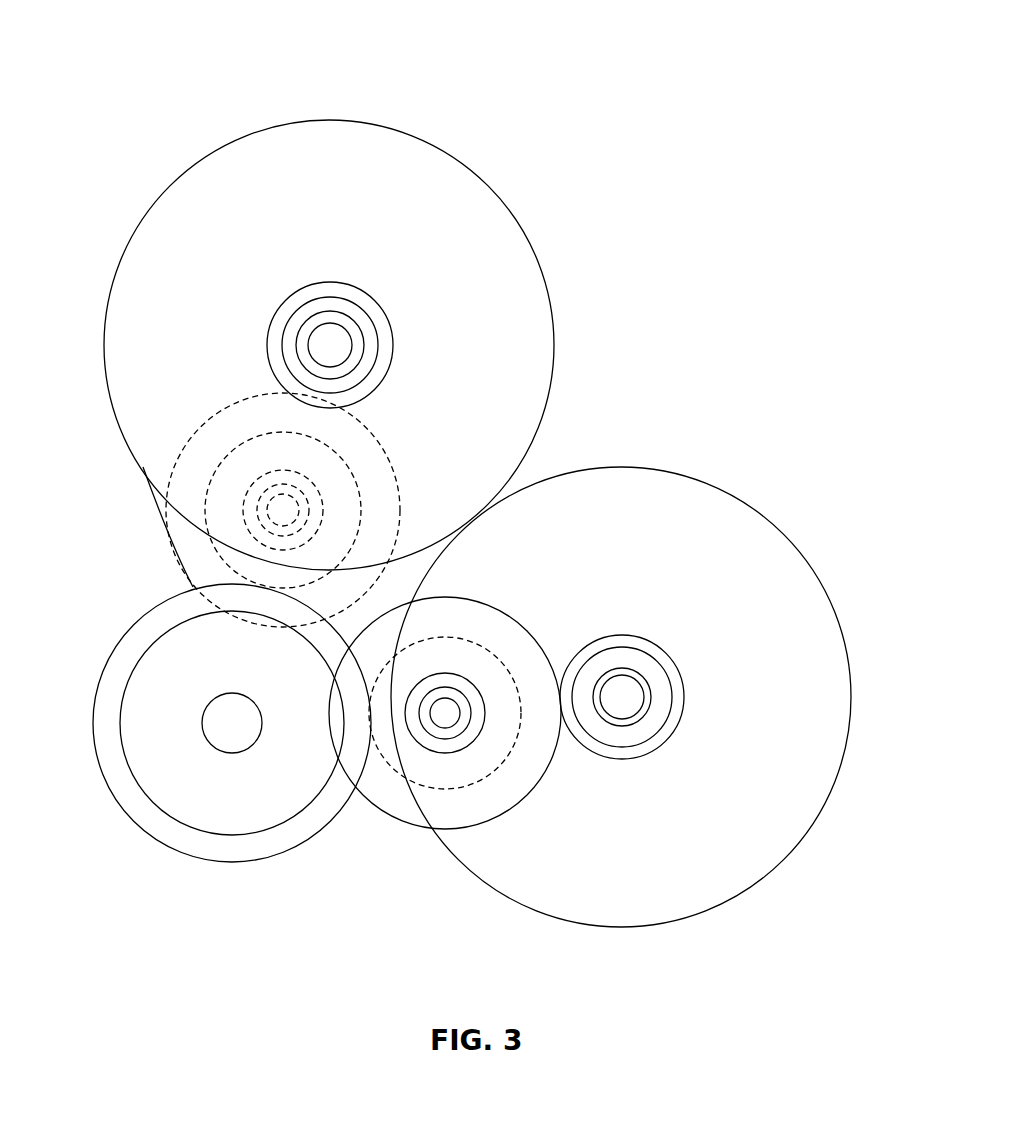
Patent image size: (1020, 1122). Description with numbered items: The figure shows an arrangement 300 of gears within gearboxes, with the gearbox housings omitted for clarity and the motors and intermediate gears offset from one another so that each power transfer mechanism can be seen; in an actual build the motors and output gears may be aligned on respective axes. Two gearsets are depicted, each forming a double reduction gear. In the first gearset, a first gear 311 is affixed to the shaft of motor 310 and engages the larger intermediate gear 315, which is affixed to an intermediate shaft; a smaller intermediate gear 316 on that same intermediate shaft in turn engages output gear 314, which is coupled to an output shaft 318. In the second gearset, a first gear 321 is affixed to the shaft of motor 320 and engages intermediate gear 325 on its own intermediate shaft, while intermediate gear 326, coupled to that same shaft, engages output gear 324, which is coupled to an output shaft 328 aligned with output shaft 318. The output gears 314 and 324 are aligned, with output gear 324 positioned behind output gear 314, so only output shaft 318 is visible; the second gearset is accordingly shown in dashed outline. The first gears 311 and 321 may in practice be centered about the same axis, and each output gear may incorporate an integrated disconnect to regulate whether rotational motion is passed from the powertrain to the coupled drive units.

The arrangement 300 is at (128, 54).
The motor 310 is at (850, 712).
The first gear 311 is at (684, 697).
The output gear 314 is at (194, 723).
The intermediate gear 315 is at (377, 812).
The intermediate gear 316 is at (403, 777).
The output shaft 318 is at (201, 805).
The motor 320 is at (543, 263).
The first gear 321 is at (393, 345).
The output gear 324 is at (97, 778).
The intermediate gear 325 is at (166, 528).
The intermediate gear 326 is at (220, 555).
The output shaft 328 is at (231, 753).